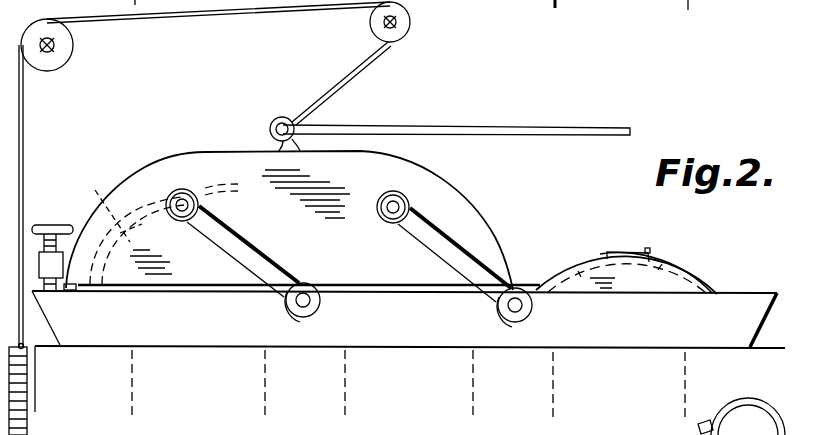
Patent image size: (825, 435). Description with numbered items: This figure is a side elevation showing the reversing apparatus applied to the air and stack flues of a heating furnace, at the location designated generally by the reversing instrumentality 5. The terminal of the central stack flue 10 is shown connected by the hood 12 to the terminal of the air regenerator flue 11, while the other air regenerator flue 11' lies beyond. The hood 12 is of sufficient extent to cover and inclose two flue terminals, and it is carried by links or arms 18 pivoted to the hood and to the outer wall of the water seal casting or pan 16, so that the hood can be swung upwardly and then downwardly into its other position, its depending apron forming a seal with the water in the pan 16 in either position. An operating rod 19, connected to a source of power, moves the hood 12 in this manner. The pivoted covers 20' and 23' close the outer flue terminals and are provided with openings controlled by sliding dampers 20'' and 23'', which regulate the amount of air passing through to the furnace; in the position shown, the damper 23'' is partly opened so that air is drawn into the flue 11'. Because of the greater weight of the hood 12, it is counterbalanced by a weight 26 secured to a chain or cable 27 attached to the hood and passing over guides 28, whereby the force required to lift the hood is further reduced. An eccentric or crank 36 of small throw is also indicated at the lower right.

The reversing instrumentality 5 is at (360, 390).
The central stack flue 10 is at (404, 379).
The air regenerator flue 11 is at (186, 379).
The air regenerator flue 11' is at (615, 378).
The hood 12 is at (474, 216).
The water seal casting or pan 16 is at (762, 320).
The links or arms 18 is at (247, 250).
The operating rod 19 is at (462, 131).
The pivoted cover 20' is at (117, 235).
The sliding damper 20'' is at (155, 200).
The pivoted cover 23' is at (644, 268).
The sliding damper 23'' is at (645, 240).
The weight 26 is at (27, 420).
The chain or cable 27 is at (245, 13).
The guides 28 is at (54, 65).
The eccentric or crank 36 is at (754, 428).